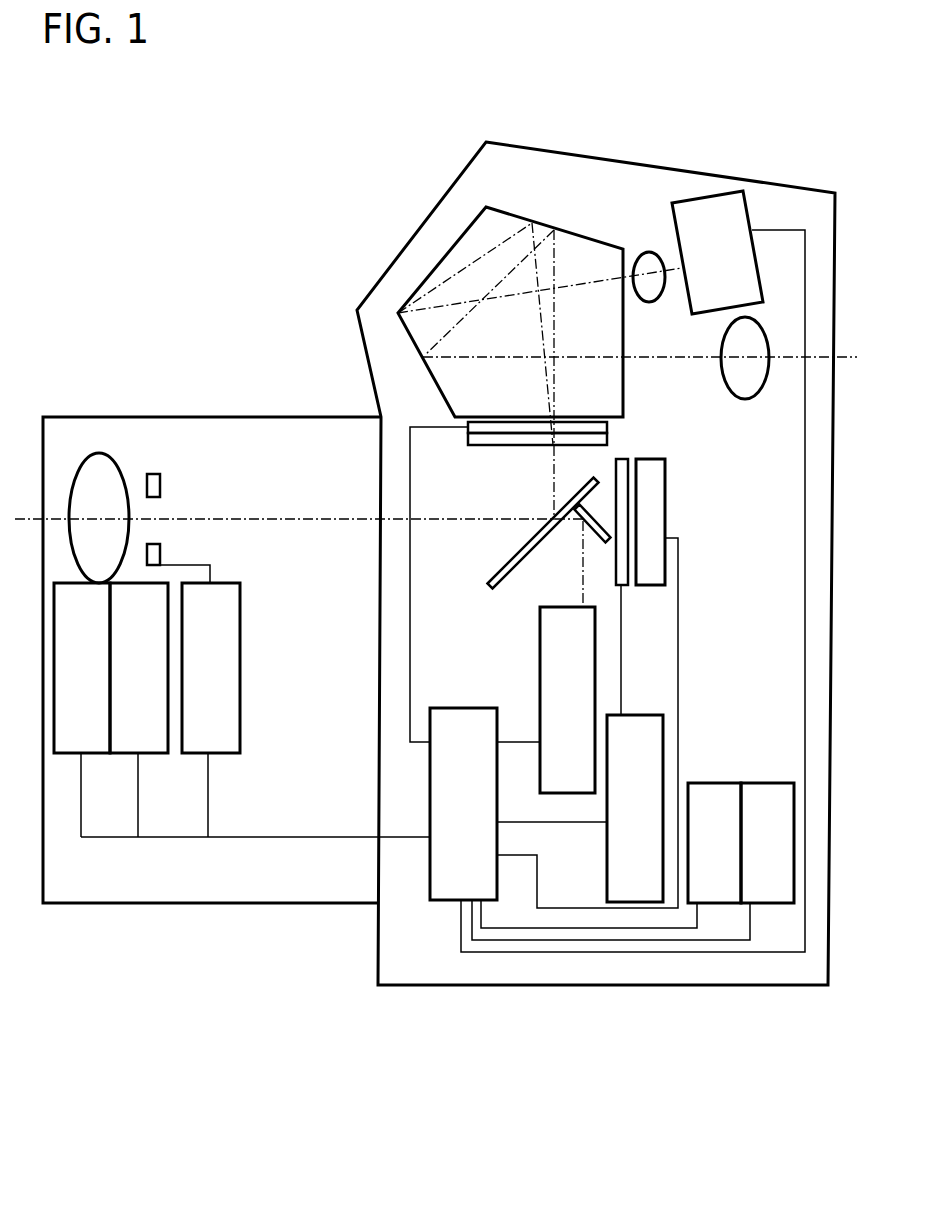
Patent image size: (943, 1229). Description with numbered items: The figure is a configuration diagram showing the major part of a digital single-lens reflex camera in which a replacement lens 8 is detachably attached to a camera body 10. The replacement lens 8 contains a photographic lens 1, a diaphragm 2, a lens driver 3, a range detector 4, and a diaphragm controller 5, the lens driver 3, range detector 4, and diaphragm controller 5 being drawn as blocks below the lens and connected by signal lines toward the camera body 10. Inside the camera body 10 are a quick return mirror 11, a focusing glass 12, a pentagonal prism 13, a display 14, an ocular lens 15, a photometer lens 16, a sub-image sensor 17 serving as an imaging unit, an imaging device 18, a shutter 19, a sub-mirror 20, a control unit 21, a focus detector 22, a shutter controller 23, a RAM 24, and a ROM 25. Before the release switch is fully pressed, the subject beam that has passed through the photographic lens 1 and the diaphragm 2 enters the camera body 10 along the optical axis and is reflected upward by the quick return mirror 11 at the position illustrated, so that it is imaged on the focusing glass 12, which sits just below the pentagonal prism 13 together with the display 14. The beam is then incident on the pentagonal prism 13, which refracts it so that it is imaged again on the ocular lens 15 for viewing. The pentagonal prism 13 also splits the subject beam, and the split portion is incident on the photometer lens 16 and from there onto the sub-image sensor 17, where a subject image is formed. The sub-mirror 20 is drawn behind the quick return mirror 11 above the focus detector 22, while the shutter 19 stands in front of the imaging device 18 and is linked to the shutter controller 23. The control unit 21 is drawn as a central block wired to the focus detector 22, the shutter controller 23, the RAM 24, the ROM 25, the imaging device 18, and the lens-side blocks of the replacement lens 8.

The photographic lens 1 is at (103, 455).
The diaphragm 2 is at (163, 481).
The lens driver 3 is at (91, 756).
The range detector 4 is at (150, 756).
The diaphragm controller 5 is at (223, 756).
The replacement lens 8 is at (193, 904).
The camera body 10 is at (594, 987).
The quick return mirror 11 is at (498, 569).
The focusing glass 12 is at (480, 446).
The pentagonal prism 13 is at (438, 387).
The display 14 is at (609, 426).
The ocular lens 15 is at (745, 399).
The photometer lens 16 is at (647, 252).
The sub-image sensor 17 is at (755, 250).
The imaging device 18 is at (667, 491).
The shutter 19 is at (623, 588).
The sub-mirror 20 is at (596, 538).
The control unit 21 is at (462, 707).
The focus detector 22 is at (540, 634).
The shutter controller 23 is at (607, 858).
The RAM 24 is at (716, 782).
The ROM 25 is at (766, 782).